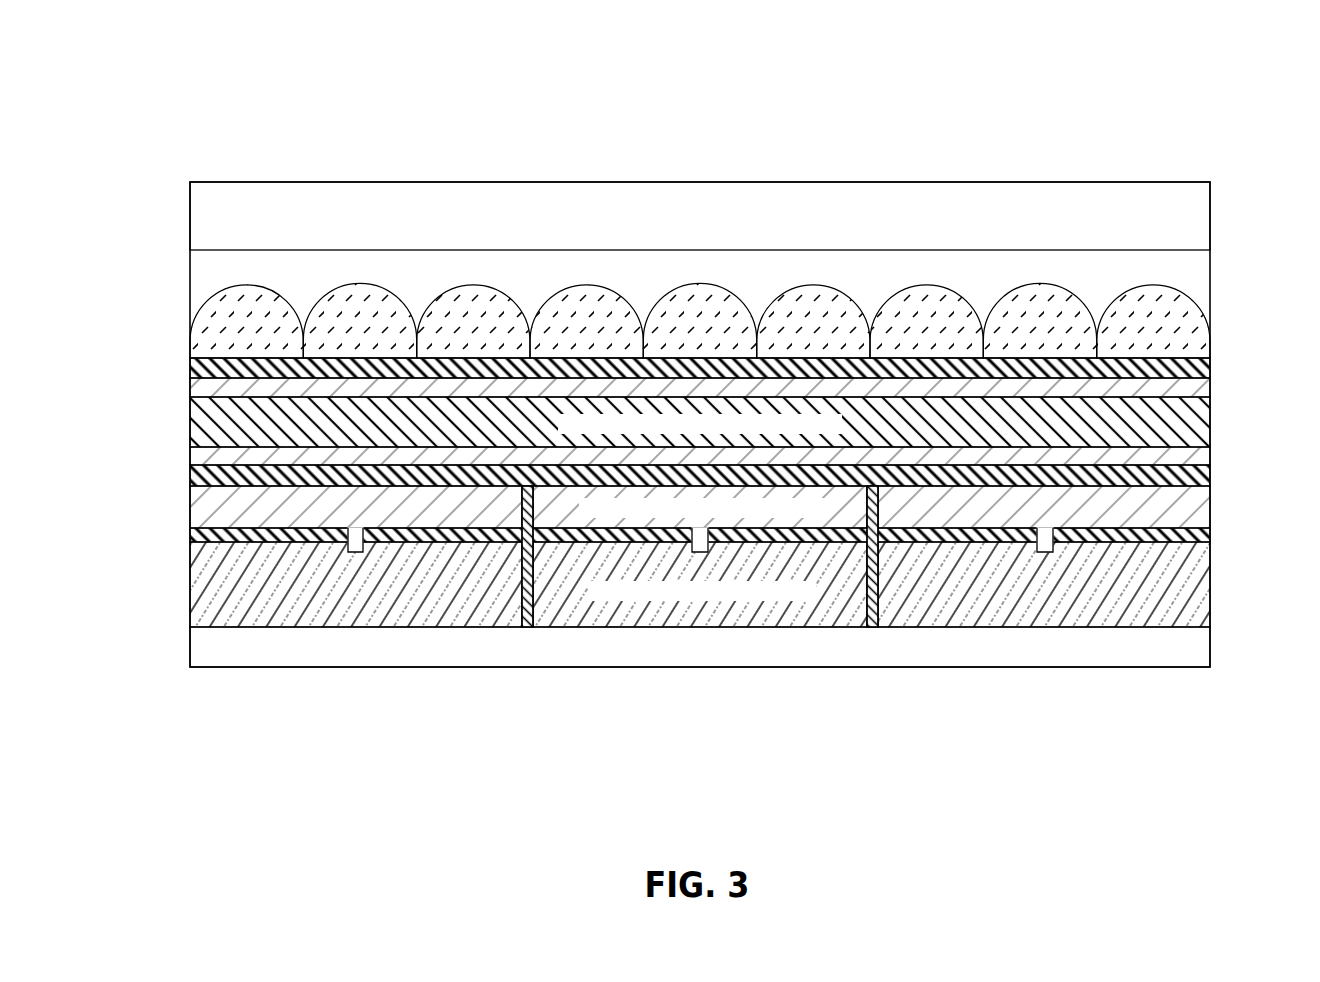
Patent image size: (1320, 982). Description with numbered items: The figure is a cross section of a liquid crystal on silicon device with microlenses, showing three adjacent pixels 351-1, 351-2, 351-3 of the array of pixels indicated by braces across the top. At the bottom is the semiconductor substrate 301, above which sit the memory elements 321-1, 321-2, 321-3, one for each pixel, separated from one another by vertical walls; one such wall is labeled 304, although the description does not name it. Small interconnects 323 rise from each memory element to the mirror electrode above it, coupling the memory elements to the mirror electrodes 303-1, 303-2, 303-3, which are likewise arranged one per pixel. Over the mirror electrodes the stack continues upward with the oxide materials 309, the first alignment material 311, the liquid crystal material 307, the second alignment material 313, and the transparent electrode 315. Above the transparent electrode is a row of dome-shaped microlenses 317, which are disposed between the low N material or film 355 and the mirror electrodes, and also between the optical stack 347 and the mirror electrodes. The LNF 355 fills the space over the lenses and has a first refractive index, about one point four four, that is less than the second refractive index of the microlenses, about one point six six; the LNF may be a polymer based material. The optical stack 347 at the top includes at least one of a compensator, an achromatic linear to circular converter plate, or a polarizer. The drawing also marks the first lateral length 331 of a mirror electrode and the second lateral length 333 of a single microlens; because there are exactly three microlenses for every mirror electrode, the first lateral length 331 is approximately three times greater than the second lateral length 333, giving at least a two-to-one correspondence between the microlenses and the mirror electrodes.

The semiconductor substrate 301 is at (700, 647).
The mirror electrode 303-1 is at (192, 497).
The mirror electrode 303-2 is at (700, 507).
The mirror electrode 303-3 is at (1212, 493).
The pillar / inter-pixel spacer 304 is at (522, 598).
The liquid crystal material 307 is at (700, 422).
The oxide material 309 is at (192, 473).
The first alignment material 311 is at (192, 448).
The second alignment material 313 is at (192, 389).
The transparent electrode 315 is at (192, 370).
The microlens 317 is at (1050, 283).
The memory element 321-1 is at (194, 578).
The memory element 321-2 is at (700, 584).
The memory element 321-3 is at (1206, 582).
The interconnect 323 is at (1045, 552).
The first lateral length 331 is at (879, 513).
The second lateral length 333 is at (988, 342).
The optical stack 347 is at (700, 216).
The pixel 351-1 is at (190, 155).
The pixel 351-2 is at (533, 155).
The pixel 351-3 is at (878, 155).
The low N material or film (LNF) 355 is at (700, 306).